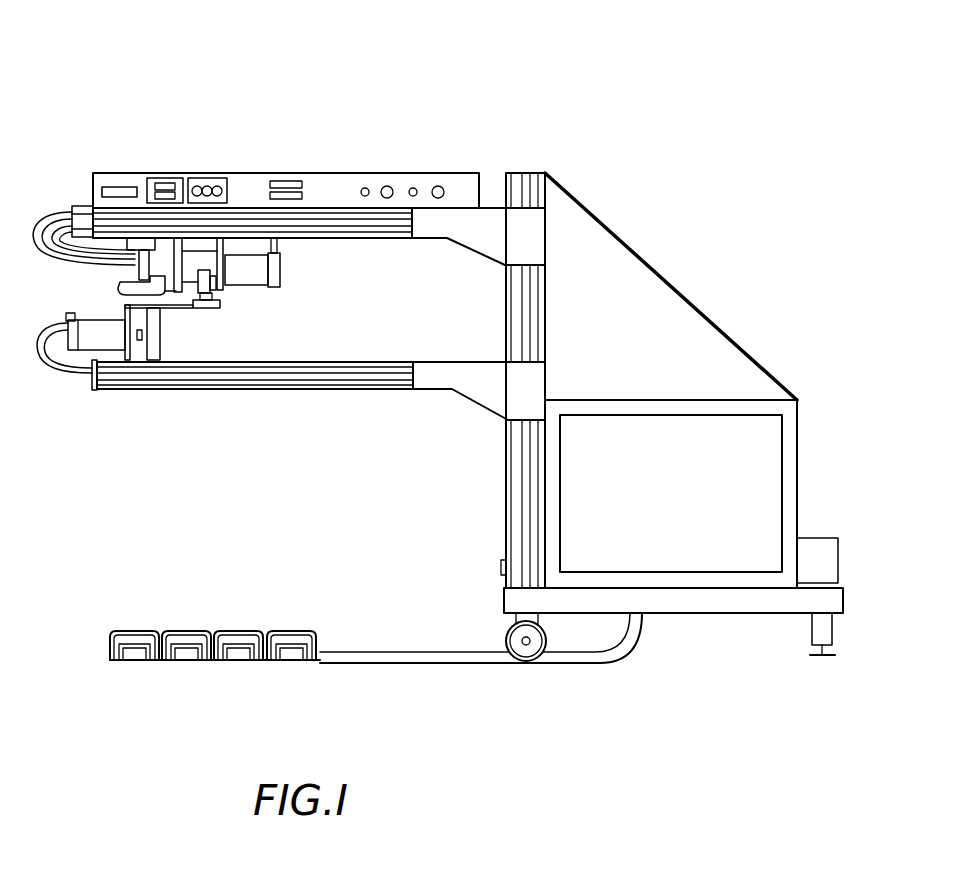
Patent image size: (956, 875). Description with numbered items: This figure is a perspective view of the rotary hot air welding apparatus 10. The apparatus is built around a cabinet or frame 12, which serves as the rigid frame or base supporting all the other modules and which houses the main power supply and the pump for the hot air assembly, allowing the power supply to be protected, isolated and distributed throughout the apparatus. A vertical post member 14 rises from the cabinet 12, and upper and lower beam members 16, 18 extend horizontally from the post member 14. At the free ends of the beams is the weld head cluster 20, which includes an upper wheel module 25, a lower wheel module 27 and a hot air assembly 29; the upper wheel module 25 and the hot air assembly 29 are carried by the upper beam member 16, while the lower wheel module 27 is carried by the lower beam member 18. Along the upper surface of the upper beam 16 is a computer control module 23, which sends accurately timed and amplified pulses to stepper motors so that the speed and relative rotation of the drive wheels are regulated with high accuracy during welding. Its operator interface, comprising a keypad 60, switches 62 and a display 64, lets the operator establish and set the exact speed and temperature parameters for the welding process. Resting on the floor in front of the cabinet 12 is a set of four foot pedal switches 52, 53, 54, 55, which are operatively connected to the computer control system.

The rotary hot air welding apparatus 10 is at (548, 78).
The cabinet or frame 12 is at (803, 420).
The vertical post member 14 is at (507, 493).
The upper beam member 16 is at (420, 227).
The lower beam member 18 is at (415, 392).
The weld head cluster 20 is at (247, 330).
The computer control module 23 is at (437, 178).
The upper wheel module 25 is at (226, 287).
The lower wheel module 27 is at (62, 385).
The hot air assembly 29 is at (110, 277).
The foot pedal switch 52 is at (131, 630).
The foot pedal switch 53 is at (184, 630).
The foot pedal switch 54 is at (236, 630).
The foot pedal switch 55 is at (289, 630).
The keypad 60 is at (168, 177).
The switches 62 is at (222, 178).
The display 64 is at (124, 187).